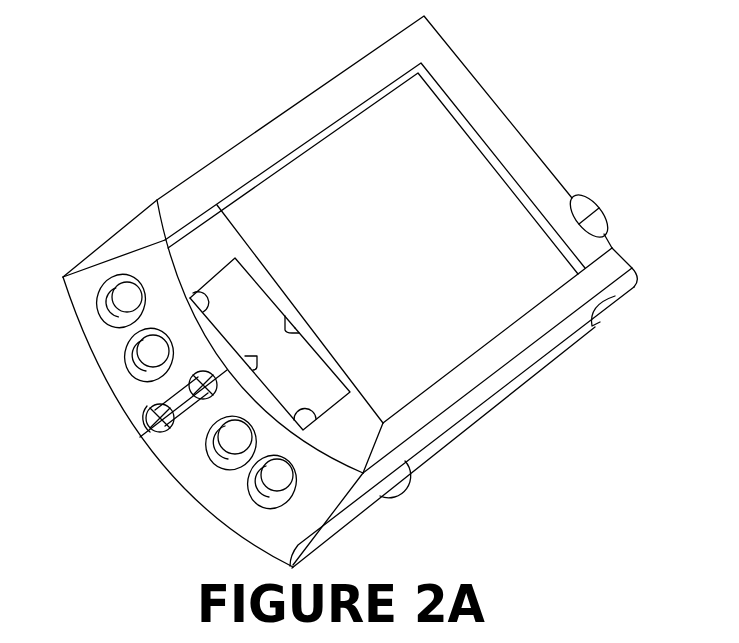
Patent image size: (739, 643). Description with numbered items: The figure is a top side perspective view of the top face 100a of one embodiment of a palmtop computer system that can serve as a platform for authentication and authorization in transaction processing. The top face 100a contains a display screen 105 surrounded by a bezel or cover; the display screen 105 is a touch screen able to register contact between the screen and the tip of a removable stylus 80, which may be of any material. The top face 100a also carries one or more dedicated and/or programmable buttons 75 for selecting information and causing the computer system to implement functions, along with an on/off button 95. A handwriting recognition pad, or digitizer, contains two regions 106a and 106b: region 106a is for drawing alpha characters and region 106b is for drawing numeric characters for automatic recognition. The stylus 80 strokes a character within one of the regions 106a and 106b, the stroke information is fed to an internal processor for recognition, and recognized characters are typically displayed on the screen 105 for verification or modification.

The top face 100a is at (67, 47).
The buttons 75 is at (126, 297).
The stylus 80 is at (530, 367).
The on/off button 95 is at (602, 214).
The display screen 105 is at (423, 255).
The region 106a is at (265, 320).
The region 106b is at (328, 394).